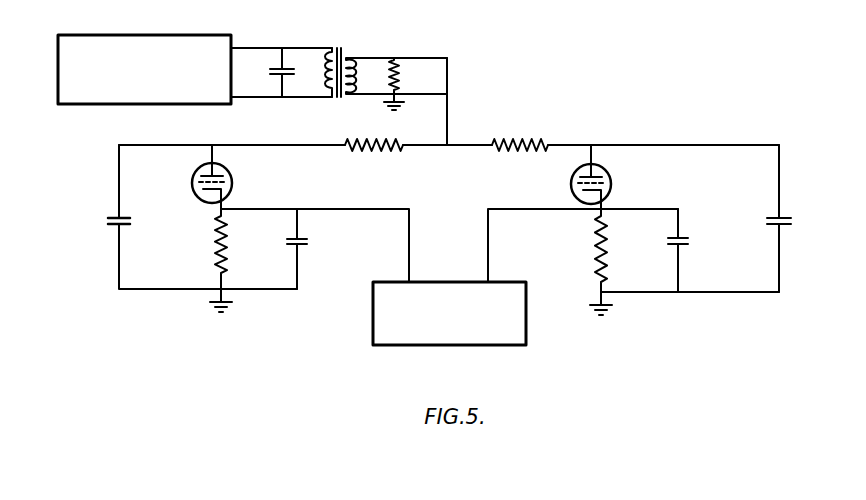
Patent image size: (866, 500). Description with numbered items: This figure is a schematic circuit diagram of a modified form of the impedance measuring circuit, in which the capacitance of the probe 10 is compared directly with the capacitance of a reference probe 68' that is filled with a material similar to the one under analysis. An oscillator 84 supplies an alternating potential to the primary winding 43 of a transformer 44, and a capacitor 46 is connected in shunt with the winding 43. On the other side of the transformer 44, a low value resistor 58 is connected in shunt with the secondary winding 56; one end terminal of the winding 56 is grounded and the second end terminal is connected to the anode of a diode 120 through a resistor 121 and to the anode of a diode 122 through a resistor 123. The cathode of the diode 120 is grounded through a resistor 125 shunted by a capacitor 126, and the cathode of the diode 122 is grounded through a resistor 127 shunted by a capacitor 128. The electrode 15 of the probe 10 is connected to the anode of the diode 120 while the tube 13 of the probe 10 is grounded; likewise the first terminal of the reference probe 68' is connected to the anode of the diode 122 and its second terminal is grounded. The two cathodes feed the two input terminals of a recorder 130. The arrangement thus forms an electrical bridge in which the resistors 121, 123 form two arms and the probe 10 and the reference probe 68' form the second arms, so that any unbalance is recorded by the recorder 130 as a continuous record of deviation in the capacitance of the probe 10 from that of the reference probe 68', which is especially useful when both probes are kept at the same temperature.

The oscillator 84 is at (128, 35).
The capacitor 46 is at (272, 72).
The primary winding 43 is at (319, 80).
The transformer 44 is at (343, 45).
The secondary winding 56 is at (362, 93).
The low value resistor 58 is at (402, 75).
The probe 10 is at (111, 221).
The electrode 15 is at (127, 216).
The tube 13 is at (113, 227).
The diode 120 is at (233, 182).
The resistor 121 is at (383, 153).
The diode 122 is at (612, 181).
The resistor 123 is at (542, 148).
The resistor 125 is at (212, 250).
The capacitor 126 is at (310, 240).
The resistor 127 is at (596, 238).
The capacitor 128 is at (690, 243).
The recorder 130 is at (512, 285).
The reference probe 68' is at (804, 218).